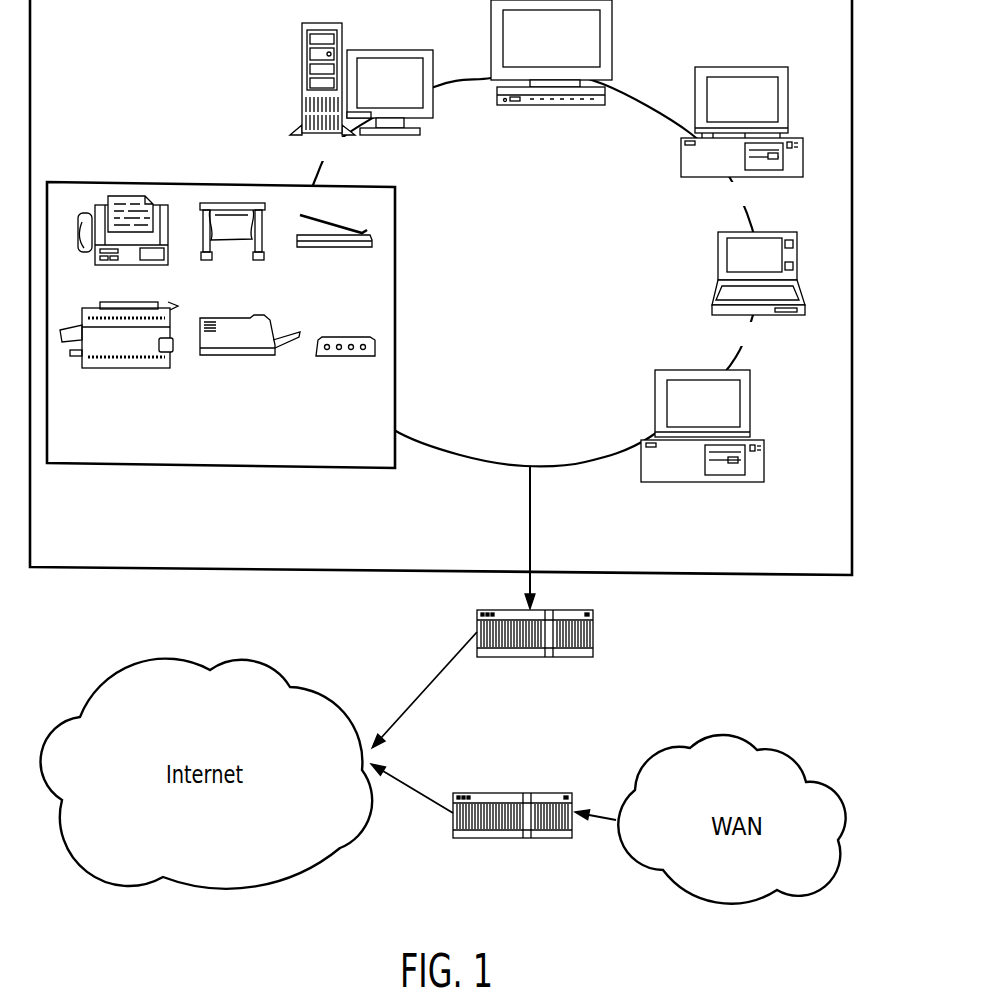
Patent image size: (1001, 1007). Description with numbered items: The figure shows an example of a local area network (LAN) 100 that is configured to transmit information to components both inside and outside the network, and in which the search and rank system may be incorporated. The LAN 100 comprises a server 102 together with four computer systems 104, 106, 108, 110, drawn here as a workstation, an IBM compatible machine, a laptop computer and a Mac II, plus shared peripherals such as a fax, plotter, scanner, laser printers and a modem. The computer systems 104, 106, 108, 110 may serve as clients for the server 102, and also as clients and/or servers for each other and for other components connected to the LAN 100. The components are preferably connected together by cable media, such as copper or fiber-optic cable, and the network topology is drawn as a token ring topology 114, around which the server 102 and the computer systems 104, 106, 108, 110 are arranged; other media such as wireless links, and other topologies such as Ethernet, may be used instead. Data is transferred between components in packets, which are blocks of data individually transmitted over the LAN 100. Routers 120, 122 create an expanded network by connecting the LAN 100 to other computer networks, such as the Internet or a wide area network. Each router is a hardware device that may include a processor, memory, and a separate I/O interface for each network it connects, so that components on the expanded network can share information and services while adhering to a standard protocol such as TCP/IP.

The local area network 100 is at (470, 553).
The server 102 is at (361, 93).
The computer system 104 is at (556, 69).
The computer system 106 is at (737, 138).
The computer system 108 is at (734, 290).
The computer system 110 is at (247, 457).
The token ring topology 114 is at (601, 283).
The router 120 is at (535, 578).
The router 122 is at (512, 833).